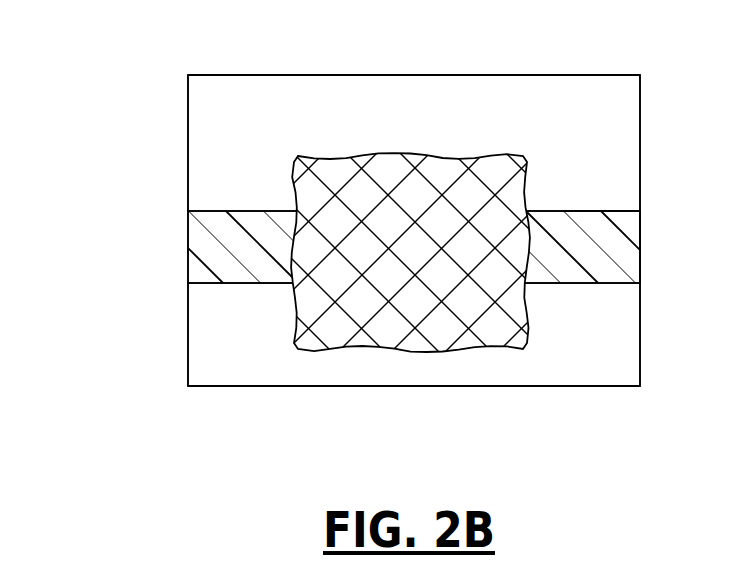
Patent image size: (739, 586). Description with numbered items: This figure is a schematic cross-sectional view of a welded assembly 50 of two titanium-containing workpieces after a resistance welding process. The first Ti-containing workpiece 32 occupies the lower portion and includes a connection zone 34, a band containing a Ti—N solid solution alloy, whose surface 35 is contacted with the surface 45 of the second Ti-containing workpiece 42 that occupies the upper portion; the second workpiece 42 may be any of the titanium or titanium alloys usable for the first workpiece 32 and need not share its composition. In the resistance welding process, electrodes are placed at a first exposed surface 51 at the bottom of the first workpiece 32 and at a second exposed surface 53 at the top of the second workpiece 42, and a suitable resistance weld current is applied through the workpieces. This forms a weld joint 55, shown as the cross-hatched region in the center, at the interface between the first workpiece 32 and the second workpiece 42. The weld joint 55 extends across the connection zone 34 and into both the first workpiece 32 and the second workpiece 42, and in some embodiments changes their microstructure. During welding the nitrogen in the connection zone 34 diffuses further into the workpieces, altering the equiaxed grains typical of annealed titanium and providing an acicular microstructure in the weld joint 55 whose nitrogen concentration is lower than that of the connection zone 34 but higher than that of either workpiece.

The bonded assembly 50 is at (88, 121).
The second Ti-containing workpiece 42 is at (202, 147).
The first Ti-containing workpiece 32 is at (203, 354).
The connection zone 34 is at (202, 251).
The surface 35 is at (606, 211).
The surface 45 is at (625, 214).
The second exposed surface 53 is at (357, 75).
The first exposed surface 51 is at (434, 386).
The weld joint 55 is at (444, 165).